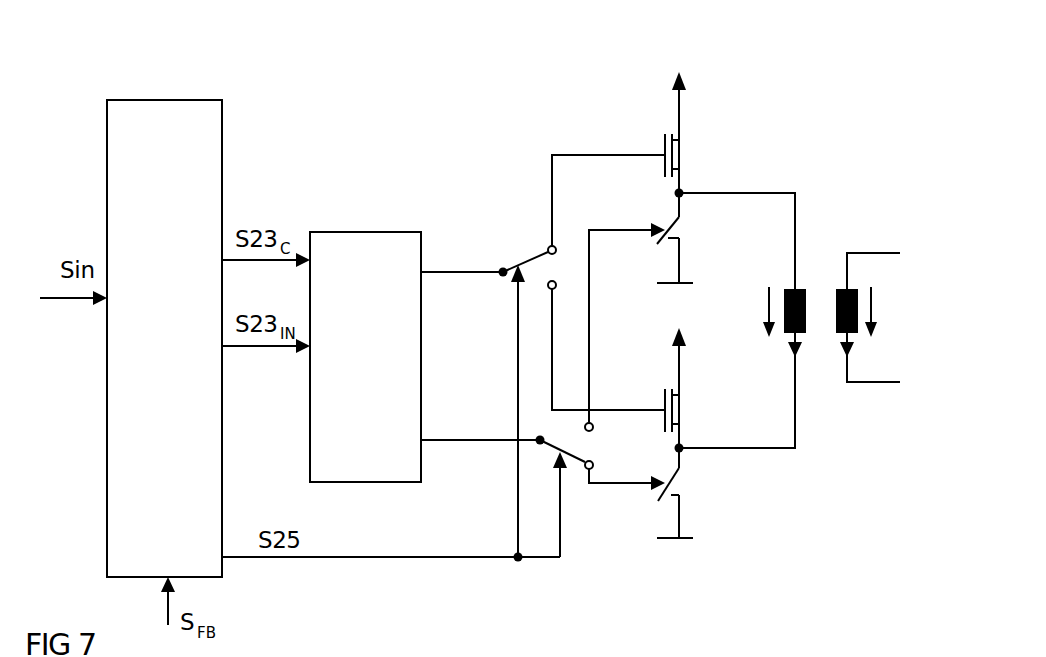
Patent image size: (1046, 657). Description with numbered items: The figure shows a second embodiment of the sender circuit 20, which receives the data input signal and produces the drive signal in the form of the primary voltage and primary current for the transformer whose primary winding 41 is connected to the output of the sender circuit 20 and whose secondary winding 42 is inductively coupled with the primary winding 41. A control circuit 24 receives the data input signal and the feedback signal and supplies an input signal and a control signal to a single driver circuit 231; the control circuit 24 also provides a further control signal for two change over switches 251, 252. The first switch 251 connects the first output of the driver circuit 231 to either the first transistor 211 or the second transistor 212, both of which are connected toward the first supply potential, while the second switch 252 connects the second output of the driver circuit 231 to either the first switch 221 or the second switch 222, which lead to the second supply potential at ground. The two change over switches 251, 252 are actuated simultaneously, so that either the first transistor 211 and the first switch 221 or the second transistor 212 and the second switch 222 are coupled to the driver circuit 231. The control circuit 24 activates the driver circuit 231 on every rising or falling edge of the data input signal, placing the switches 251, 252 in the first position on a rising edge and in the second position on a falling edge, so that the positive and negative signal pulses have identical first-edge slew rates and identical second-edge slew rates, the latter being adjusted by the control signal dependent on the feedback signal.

The sender circuit 20 is at (533, 70).
The control circuit 24 is at (162, 100).
The driver circuit 231 is at (368, 232).
The first switch 251 is at (510, 253).
The second switch 252 is at (585, 453).
The first transistor 211 is at (682, 157).
The second transistor 212 is at (683, 412).
The first switch 221 is at (679, 494).
The second switch 222 is at (678, 233).
The primary winding 41 is at (803, 287).
The secondary winding 42 is at (835, 347).